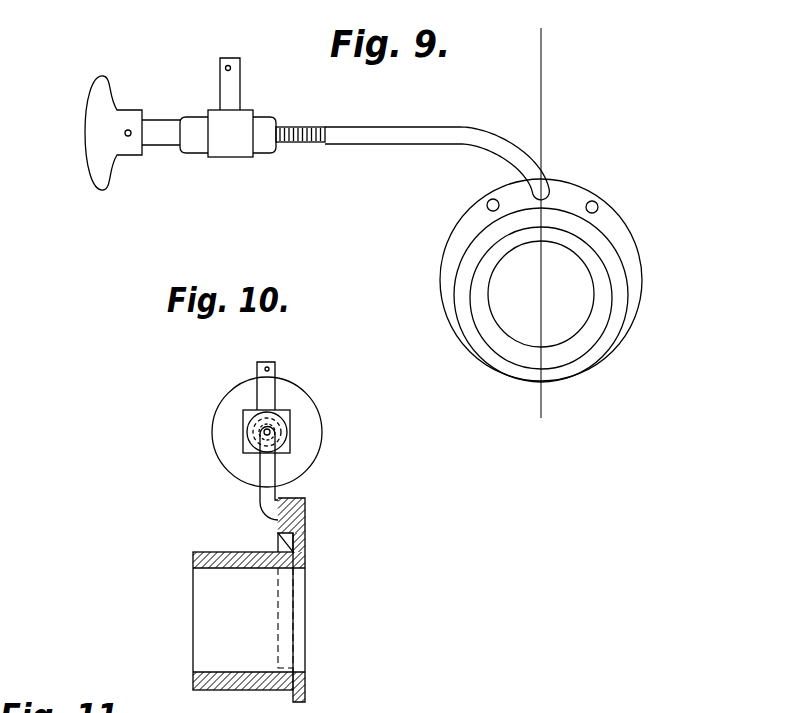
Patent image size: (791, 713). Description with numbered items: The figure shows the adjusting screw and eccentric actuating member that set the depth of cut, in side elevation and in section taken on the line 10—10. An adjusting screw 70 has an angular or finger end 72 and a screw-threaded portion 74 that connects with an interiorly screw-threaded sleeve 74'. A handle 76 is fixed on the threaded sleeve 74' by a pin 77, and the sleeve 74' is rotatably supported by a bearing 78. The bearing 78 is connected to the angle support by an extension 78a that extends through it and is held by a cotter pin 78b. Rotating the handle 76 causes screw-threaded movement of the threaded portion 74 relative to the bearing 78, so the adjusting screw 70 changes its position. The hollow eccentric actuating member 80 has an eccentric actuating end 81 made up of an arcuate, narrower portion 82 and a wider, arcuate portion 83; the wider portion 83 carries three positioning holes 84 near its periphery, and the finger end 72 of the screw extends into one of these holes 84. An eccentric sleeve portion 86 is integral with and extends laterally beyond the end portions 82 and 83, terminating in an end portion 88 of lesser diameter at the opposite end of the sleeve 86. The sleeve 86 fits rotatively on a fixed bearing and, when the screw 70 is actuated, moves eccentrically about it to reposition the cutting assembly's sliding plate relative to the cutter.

In FIG. 9, the section line 10— 10 is at (562, 48).
In FIG. 9, the adjusting screw 70 is at (390, 126).
In FIG. 10, the adjusting screw 70 is at (268, 469).
In FIG. 9, the angular or finger end 72 is at (553, 184).
In FIG. 10, the angular or finger end 72 is at (297, 513).
In FIG. 9, the screw-threaded portion 74 is at (311, 150).
In FIG. 9, the threaded sleeve 74' is at (282, 118).
In FIG. 9, the handle 76 is at (92, 142).
In FIG. 10, the handle 76 is at (312, 412).
In FIG. 9, the pin 77 is at (129, 130).
In FIG. 9, the bearing 78 is at (232, 157).
In FIG. 10, the bearing 78 is at (247, 432).
In FIG. 9, the extension 78a is at (232, 86).
In FIG. 10, the extension 78a is at (267, 393).
In FIG. 9, the cotter pin 78b is at (225, 68).
In FIG. 10, the cotter pin 78b is at (264, 369).
In FIG. 9, the eccentric actuating member 80 is at (646, 264).
In FIG. 9, the eccentric actuating end 81 is at (510, 193).
In FIG. 9, the arcuate, narrower portion 82 is at (548, 373).
In FIG. 9, the wider, arcuate portion 83 is at (570, 192).
In FIG. 10, the wider, arcuate portion 83 is at (302, 538).
In FIG. 9, the positioning holes 84 is at (533, 194).
In FIG. 9, the eccentric sleeve portion 86 is at (490, 335).
In FIG. 10, the eccentric sleeve portion 86 is at (227, 557).
In FIG. 9, the end portion 88 is at (607, 323).